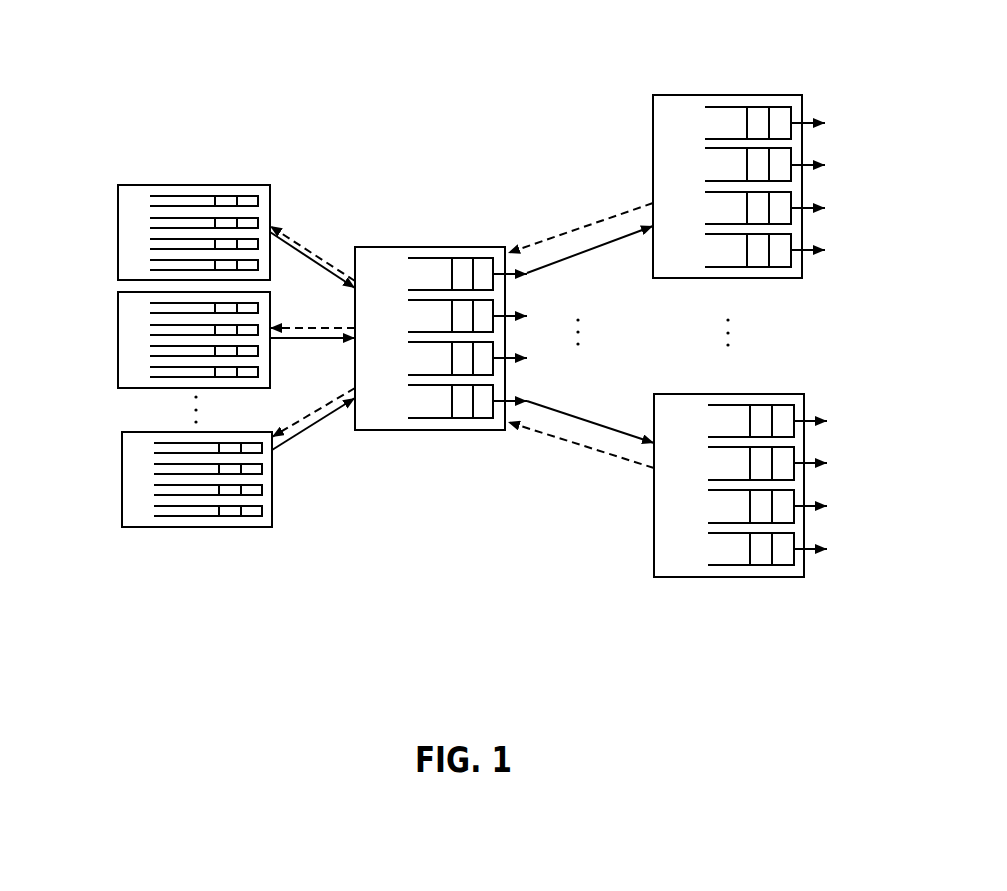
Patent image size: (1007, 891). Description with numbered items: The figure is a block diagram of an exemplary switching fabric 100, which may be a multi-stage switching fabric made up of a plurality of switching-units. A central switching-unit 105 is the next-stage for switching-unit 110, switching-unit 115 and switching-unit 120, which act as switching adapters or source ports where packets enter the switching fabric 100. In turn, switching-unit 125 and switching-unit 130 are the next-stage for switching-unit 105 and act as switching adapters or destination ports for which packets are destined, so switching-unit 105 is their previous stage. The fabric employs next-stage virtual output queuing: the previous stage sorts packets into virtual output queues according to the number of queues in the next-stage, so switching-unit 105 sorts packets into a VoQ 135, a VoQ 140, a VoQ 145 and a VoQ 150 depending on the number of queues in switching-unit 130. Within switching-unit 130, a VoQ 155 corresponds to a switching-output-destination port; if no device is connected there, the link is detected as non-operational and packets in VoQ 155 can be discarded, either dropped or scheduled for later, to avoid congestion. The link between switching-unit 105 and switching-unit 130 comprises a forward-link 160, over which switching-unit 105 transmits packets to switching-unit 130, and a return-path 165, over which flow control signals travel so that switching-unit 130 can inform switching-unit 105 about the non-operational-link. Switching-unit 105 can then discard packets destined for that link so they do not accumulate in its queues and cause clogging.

The switching fabric 100 is at (405, 97).
The switching-unit 105 is at (470, 345).
The switching-unit 110 is at (118, 233).
The switching-unit 115 is at (118, 339).
The switching-unit 120 is at (122, 479).
The switching-unit 125 is at (727, 95).
The switching-unit 130 is at (751, 489).
The VoQ 135 is at (458, 257).
The VoQ 140 is at (505, 309).
The VoQ 145 is at (503, 367).
The VoQ 150 is at (462, 420).
The VoQ 155 is at (782, 404).
The forward-link 160 is at (573, 420).
The return-path 165 is at (630, 463).